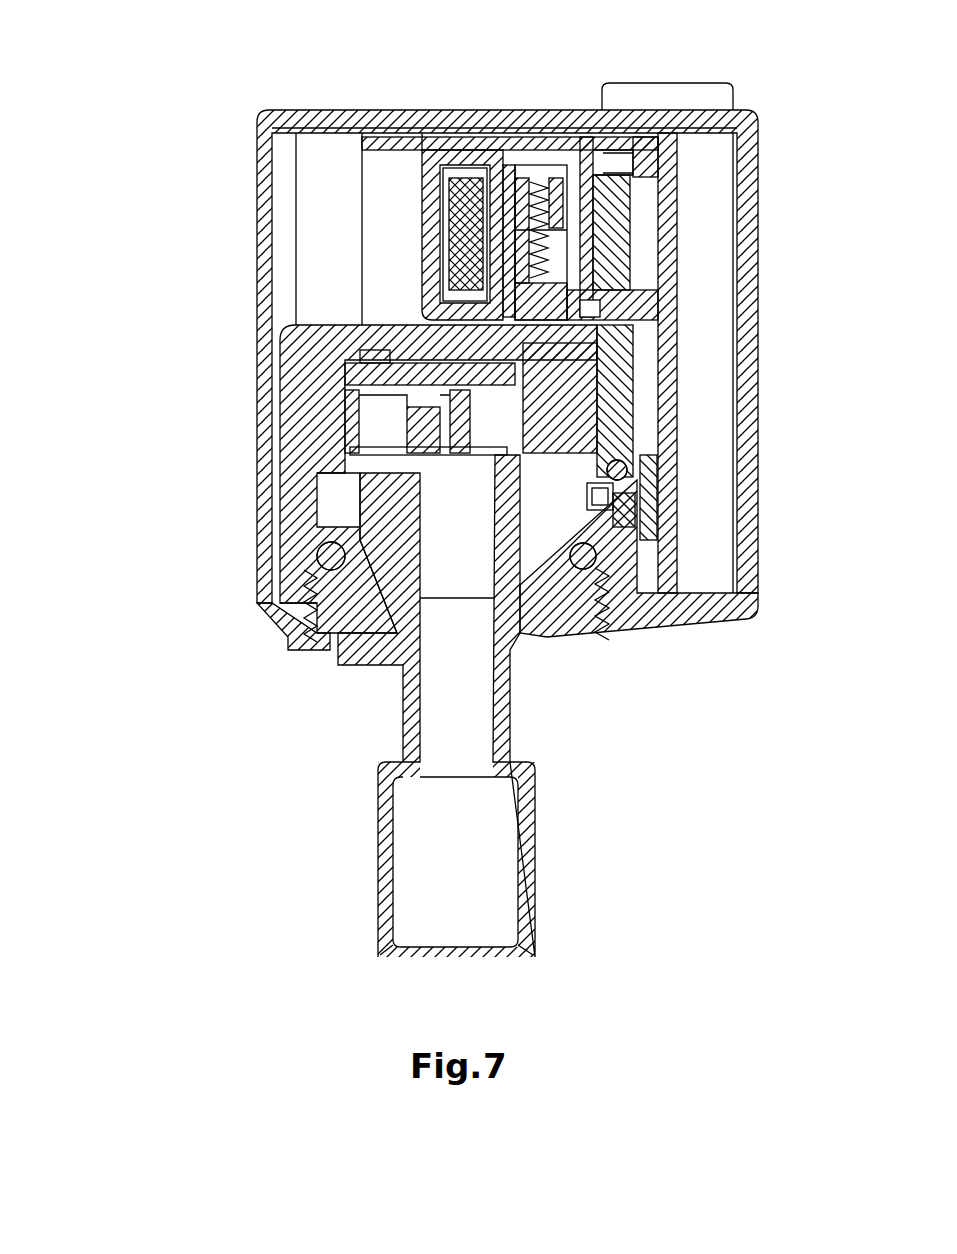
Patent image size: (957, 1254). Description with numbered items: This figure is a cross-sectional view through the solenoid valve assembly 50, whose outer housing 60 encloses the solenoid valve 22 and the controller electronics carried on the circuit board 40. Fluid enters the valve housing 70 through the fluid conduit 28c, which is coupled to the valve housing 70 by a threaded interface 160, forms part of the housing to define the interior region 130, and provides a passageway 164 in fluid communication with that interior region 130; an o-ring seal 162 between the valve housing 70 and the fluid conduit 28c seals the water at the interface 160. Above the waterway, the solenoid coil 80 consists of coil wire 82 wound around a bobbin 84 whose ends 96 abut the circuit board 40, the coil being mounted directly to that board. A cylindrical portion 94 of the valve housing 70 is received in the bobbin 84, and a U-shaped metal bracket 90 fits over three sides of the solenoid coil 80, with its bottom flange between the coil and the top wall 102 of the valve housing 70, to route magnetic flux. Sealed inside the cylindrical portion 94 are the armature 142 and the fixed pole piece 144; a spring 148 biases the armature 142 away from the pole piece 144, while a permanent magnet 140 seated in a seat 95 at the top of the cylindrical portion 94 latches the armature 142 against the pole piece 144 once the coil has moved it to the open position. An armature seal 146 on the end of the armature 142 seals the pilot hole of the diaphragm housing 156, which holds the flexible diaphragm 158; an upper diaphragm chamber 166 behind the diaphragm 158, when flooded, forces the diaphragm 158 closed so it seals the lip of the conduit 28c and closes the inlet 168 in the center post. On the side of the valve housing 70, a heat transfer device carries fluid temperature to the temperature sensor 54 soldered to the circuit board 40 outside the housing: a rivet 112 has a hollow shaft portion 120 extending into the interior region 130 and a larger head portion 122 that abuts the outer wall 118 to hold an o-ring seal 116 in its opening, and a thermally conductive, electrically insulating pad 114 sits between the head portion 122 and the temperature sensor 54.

The solenoid valve assembly 50 is at (143, 137).
The outer housing 60 is at (313, 108).
The solenoid valve 22 is at (318, 212).
The solenoid coil 80 is at (412, 146).
The cylindrical portion 94 is at (503, 150).
The permanent magnet 140 is at (535, 155).
The seat 95 is at (547, 153).
The pole piece 144 is at (600, 177).
The ends 96 is at (681, 145).
The circuit board 40 is at (668, 212).
The spring 148 is at (582, 210).
The bobbin 84 is at (448, 170).
The coil wire 82 is at (452, 215).
The armature 142 is at (497, 262).
The metal bracket 90 is at (425, 290).
The armature seal 146 is at (600, 328).
The top wall 102 is at (318, 320).
The outer wall 118 is at (613, 413).
The diaphragm housing 156 is at (345, 382).
The flexible diaphragm 158 is at (345, 415).
The valve housing 70 is at (290, 443).
The interior region 130 is at (338, 492).
The o-ring seal 162 is at (316, 556).
The upper diaphragm chamber 166 is at (387, 414).
The threaded interface 160 is at (300, 645).
The inlet 168 is at (443, 466).
The rivet 112 is at (580, 500).
The temperature sensor 54 is at (667, 493).
The o-ring seal 116 is at (627, 445).
The pad 114 is at (680, 527).
The head portion 122 is at (634, 470).
The shaft portion 120 is at (597, 578).
The fluid conduit 28c is at (535, 858).
The passageway 164 is at (457, 750).